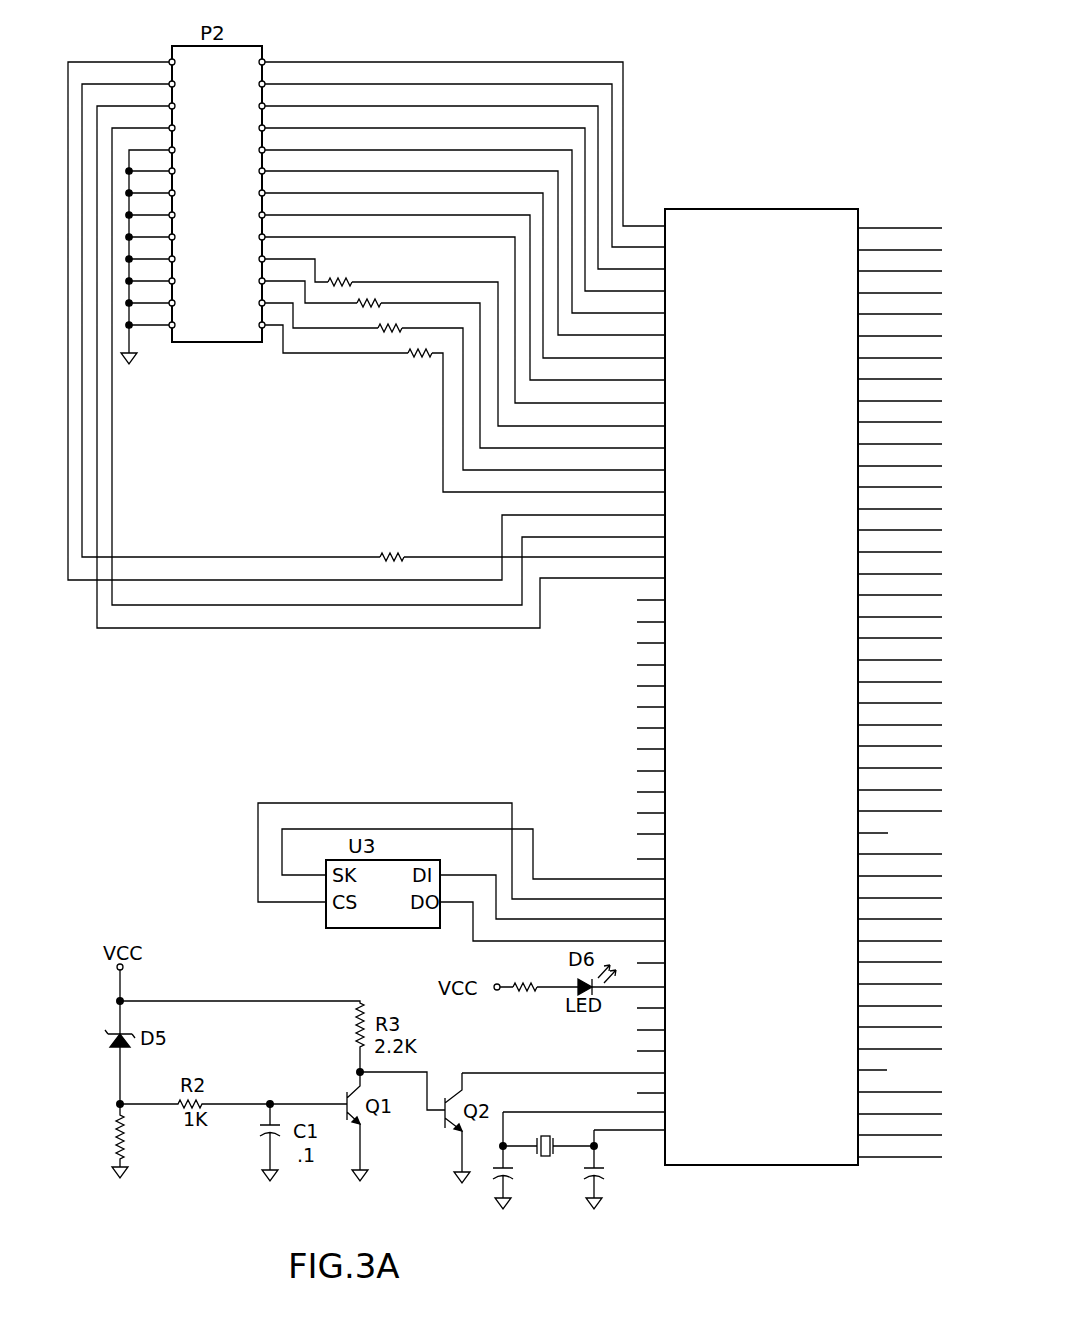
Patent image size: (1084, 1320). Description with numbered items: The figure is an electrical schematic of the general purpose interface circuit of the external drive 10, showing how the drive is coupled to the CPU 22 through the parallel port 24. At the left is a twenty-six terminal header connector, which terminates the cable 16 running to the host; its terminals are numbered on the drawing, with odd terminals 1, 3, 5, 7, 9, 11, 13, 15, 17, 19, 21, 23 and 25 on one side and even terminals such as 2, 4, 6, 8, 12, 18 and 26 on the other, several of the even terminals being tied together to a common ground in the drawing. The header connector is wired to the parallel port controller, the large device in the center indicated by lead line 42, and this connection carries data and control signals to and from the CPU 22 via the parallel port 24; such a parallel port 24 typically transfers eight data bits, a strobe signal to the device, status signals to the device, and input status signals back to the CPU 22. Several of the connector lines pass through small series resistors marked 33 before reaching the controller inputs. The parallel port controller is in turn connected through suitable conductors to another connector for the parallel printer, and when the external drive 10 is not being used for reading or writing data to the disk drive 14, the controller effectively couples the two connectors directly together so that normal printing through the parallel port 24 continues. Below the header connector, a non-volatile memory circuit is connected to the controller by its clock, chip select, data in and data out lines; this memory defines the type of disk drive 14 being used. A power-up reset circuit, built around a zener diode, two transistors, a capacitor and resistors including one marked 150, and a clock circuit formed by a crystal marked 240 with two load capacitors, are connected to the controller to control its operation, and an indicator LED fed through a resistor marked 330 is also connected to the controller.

The interface controller integrated circuit U1 42 is at (651, 1166).
The 33 ohm series resistors R5 R6 R7 R8 R9 33 is at (387, 418).
The 330 ohm LED resistor R4 330 is at (530, 985).
The crystal Y1 240 is at (548, 1148).
The 150 ohm resistor R1 150 is at (139, 1136).
The connector P2 pin 1 is at (254, 63).
The connector P2 pin 2 is at (180, 63).
The connector P2 pin 3 is at (254, 85).
The connector P2 pin 4 is at (180, 85).
The connector P2 pin 5 is at (254, 107).
The connector P2 pin 6 is at (180, 107).
The connector P2 pin 7 is at (254, 129).
The connector P2 pin 8 is at (180, 129).
The connector P2 pin 9 is at (254, 151).
The external drive 10 is at (187, 151).
The connector P2 pin 11 is at (247, 172).
The connector P2 pin 12 is at (187, 172).
The connector P2 pin 13 is at (247, 194).
The disk drive 14 is at (187, 194).
The connector P2 pin 15 is at (247, 216).
The cable 16 is at (187, 216).
The connector P2 pin 17 is at (247, 238).
The connector P2 pin 18 is at (187, 238).
The connector P2 pin 19 is at (247, 260).
The connector P2 pin 21 is at (247, 282).
The CPU 22 is at (187, 282).
The connector P2 pin 23 is at (247, 304).
The parallel port 24 is at (187, 304).
The connector P2 pin 25 is at (247, 326).
The connector P2 pin 26 is at (187, 326).